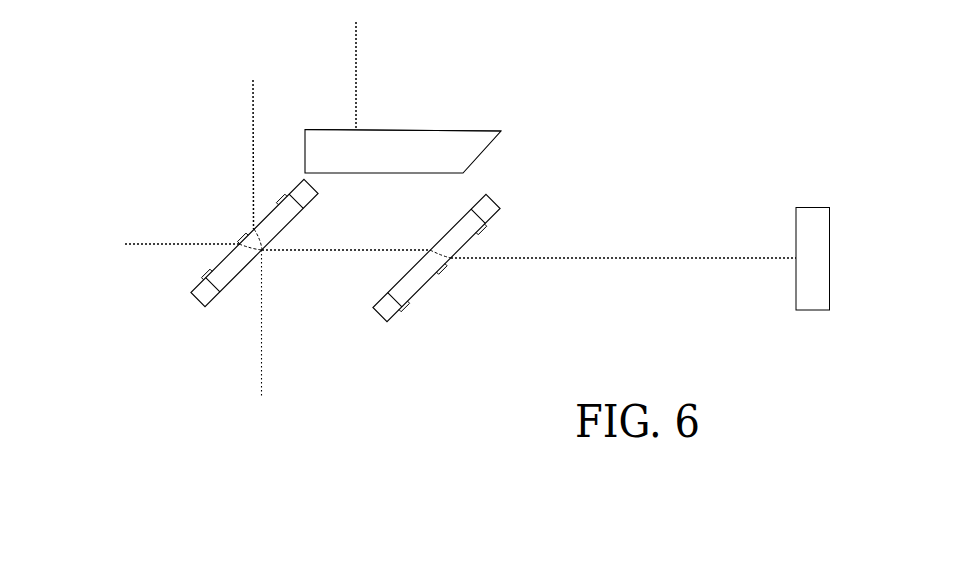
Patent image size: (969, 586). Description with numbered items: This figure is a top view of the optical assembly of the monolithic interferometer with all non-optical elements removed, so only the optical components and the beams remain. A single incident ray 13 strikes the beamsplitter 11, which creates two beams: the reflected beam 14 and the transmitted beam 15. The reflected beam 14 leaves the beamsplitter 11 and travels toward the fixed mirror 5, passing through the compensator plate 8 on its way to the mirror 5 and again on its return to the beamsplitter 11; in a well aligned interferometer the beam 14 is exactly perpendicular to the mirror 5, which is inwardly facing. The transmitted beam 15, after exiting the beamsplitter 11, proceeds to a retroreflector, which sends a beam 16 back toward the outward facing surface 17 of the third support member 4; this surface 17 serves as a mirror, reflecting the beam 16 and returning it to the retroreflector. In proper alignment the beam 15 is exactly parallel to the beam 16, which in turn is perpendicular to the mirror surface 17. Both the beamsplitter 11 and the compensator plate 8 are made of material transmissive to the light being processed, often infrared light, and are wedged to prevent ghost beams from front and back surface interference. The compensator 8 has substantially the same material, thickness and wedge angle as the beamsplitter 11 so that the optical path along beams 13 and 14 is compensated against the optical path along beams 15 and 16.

The third support member 4 is at (458, 148).
The mirror 5 is at (803, 290).
The compensator plate 8 is at (418, 283).
The beamsplitter 11 is at (192, 301).
The incident ray 13 is at (257, 353).
The reflected beam 14 is at (691, 257).
The transmitted beam 15 is at (253, 127).
The beam 16 is at (356, 54).
The outward facing surface 17 is at (407, 128).